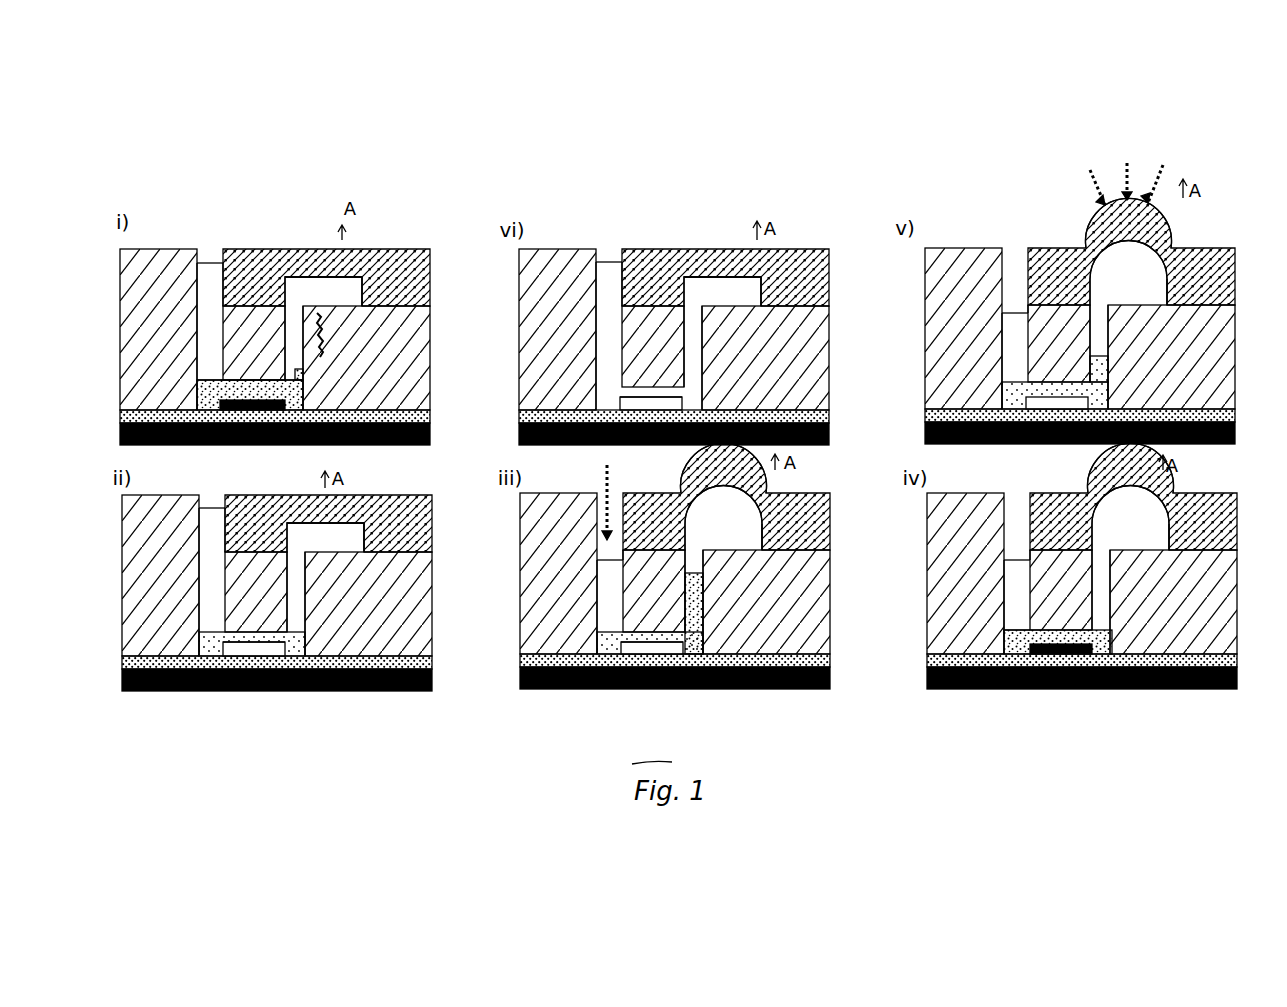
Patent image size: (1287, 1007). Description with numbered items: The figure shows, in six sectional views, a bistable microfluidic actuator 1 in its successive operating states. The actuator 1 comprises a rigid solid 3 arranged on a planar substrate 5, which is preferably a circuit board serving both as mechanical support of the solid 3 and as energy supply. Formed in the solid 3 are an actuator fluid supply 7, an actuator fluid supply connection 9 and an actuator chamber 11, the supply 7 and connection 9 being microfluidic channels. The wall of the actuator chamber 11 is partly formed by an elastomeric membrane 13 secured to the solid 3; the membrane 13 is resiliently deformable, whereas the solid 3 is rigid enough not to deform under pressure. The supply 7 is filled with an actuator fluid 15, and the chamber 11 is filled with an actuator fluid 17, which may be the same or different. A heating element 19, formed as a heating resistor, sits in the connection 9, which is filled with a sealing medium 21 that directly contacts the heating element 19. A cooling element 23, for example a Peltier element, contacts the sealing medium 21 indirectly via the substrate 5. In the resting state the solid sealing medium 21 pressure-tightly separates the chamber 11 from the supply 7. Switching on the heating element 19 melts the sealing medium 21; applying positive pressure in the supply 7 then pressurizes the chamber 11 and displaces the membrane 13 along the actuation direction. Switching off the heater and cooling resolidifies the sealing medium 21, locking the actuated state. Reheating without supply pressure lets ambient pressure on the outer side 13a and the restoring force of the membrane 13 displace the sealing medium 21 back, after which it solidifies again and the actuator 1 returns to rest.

The actuator 1 is at (832, 324).
The solid 3 is at (677, 452).
The planar substrate 5 is at (672, 532).
The actuator fluid supply 7 is at (609, 383).
The actuator fluid supply connection 9 is at (660, 538).
The actuator chamber 11 is at (755, 388).
The elastomeric membrane 13 is at (748, 375).
The outer side of the elastomeric membrane 13a is at (907, 345).
The actuator fluid 15 is at (613, 459).
The actuator fluid 17 is at (727, 449).
The heating element 19 is at (735, 508).
The sealing medium 21 is at (679, 528).
The cooling element 23 is at (671, 558).